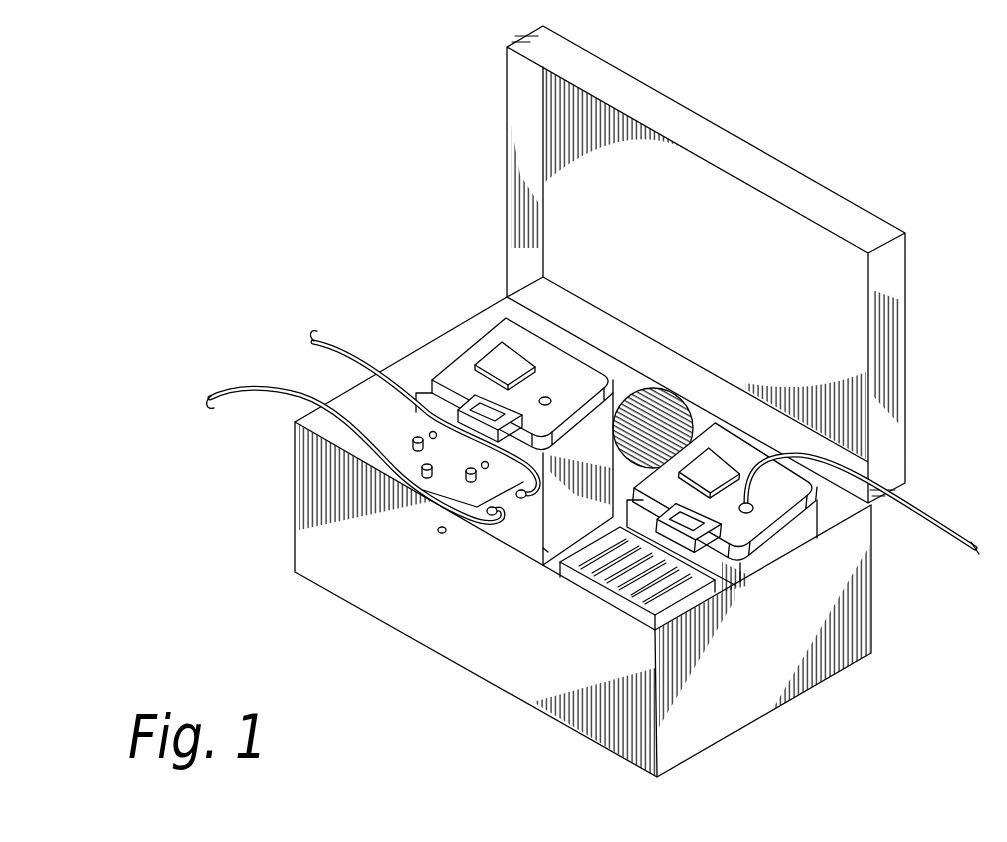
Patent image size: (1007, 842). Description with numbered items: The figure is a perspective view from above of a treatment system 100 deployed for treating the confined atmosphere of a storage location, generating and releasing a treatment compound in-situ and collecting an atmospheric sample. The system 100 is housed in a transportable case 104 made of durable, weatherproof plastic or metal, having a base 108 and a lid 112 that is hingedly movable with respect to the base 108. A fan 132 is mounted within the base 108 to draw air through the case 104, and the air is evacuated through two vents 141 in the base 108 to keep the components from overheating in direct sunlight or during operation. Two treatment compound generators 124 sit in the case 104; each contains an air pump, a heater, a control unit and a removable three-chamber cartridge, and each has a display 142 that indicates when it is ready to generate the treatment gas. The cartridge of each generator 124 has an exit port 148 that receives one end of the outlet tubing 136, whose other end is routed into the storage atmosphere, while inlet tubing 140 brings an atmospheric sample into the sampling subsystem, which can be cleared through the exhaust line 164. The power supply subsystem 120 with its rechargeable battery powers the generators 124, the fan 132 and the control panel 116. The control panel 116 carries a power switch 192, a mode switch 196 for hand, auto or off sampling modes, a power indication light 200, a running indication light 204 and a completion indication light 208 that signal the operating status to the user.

The treatment system 100 is at (314, 276).
The transportable case 104 is at (563, 744).
The base 108 is at (413, 603).
The lid 112 is at (848, 213).
The control panel 116 is at (392, 430).
The power supply subsystem 120 is at (727, 592).
The treatment compound generator 124 is at (730, 470).
The fan 132 is at (535, 535).
The outlet tubing 136 is at (953, 540).
The inlet tubing 140 is at (250, 422).
The vent 141 is at (643, 397).
The display 142 is at (545, 550).
The exit port 148 is at (813, 507).
The exhaust line 164 is at (527, 577).
The power switch 192 is at (310, 362).
The mode switch 196 is at (398, 448).
The power indication light 200 is at (483, 462).
The running indication light 204 is at (467, 408).
The completion indication light 208 is at (380, 440).